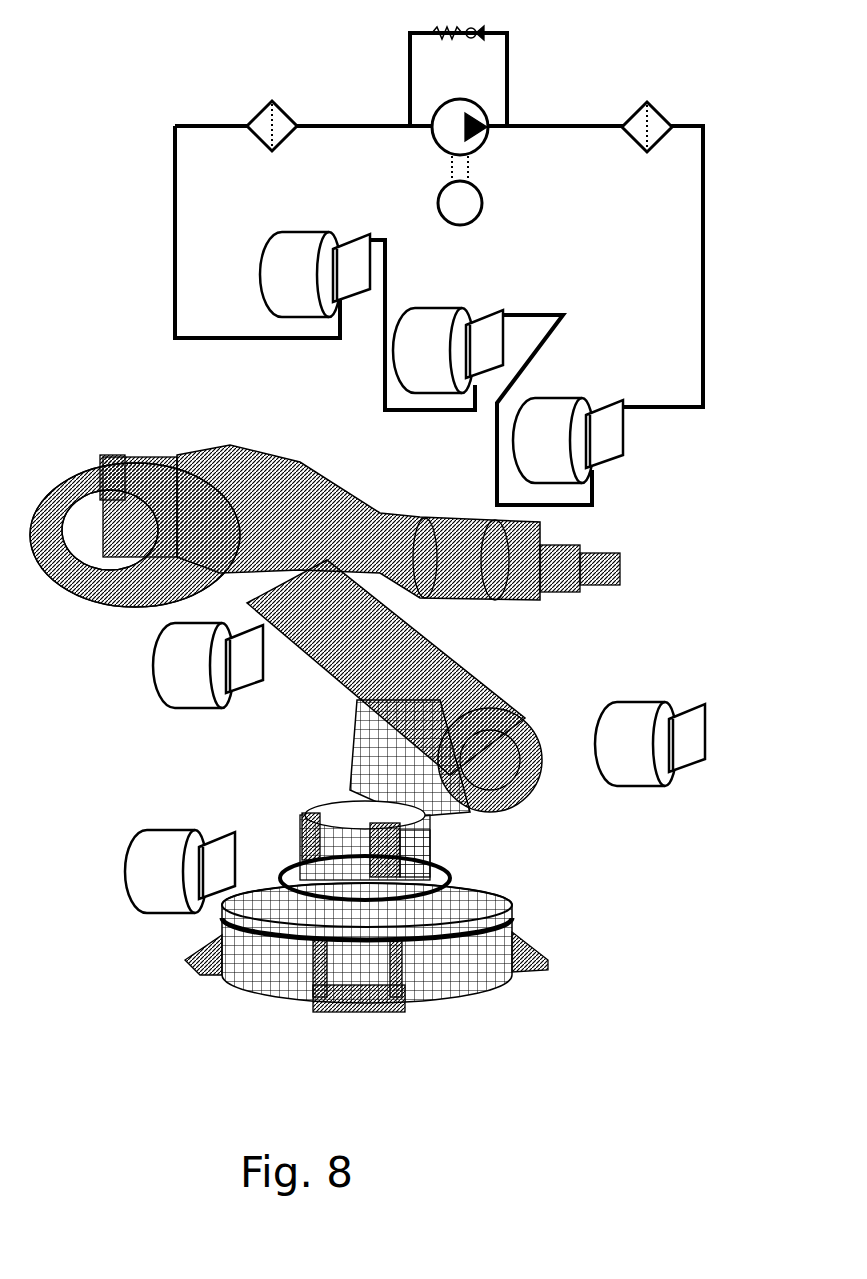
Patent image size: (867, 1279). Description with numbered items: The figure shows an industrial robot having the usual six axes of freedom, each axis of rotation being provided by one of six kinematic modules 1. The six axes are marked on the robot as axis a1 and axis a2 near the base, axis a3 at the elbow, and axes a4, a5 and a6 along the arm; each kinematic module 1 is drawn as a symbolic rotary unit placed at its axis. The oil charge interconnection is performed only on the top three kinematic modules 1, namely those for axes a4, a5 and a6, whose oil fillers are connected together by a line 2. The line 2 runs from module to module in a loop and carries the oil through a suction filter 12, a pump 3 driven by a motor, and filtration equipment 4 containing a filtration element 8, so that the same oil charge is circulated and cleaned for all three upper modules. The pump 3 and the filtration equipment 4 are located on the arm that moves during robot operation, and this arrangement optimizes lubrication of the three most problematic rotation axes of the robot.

The kinematic module 1 is at (394, 561).
The line 2 is at (172, 205).
The pump 3 is at (476, 150).
The filtration equipment 4 is at (640, 152).
The filtration element 8 is at (647, 132).
The suction filter 12 is at (268, 152).
The axis 1 a1 is at (159, 871).
The axis 2 a2 is at (625, 744).
The axis 3 a3 is at (184, 665).
The axis 4 a4 is at (315, 263).
The axis 5 a5 is at (448, 337).
The axis 6 a6 is at (568, 428).